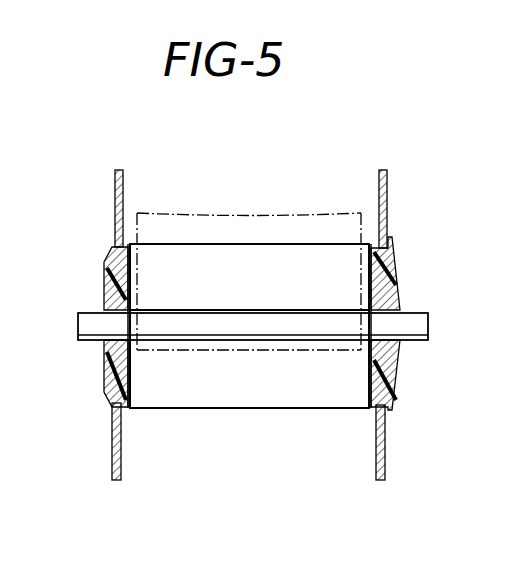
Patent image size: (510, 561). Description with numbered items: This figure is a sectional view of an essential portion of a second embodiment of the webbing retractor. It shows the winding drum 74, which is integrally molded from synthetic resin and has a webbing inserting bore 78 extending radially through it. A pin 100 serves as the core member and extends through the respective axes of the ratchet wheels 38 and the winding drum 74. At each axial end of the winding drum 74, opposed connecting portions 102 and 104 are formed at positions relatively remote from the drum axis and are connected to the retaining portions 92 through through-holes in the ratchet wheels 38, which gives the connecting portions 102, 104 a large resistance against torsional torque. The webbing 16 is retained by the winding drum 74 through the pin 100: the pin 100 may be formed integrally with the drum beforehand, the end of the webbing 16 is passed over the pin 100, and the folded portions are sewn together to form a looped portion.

The webbing 16 is at (158, 350).
The ratchet wheels 38 is at (123, 187).
The winding drum 74 is at (230, 410).
The webbing inserting bore 78 is at (255, 282).
The retaining portions 92 is at (107, 283).
The pin 100 is at (256, 331).
The connecting portion 102 is at (109, 258).
The connecting portion 104 is at (109, 380).